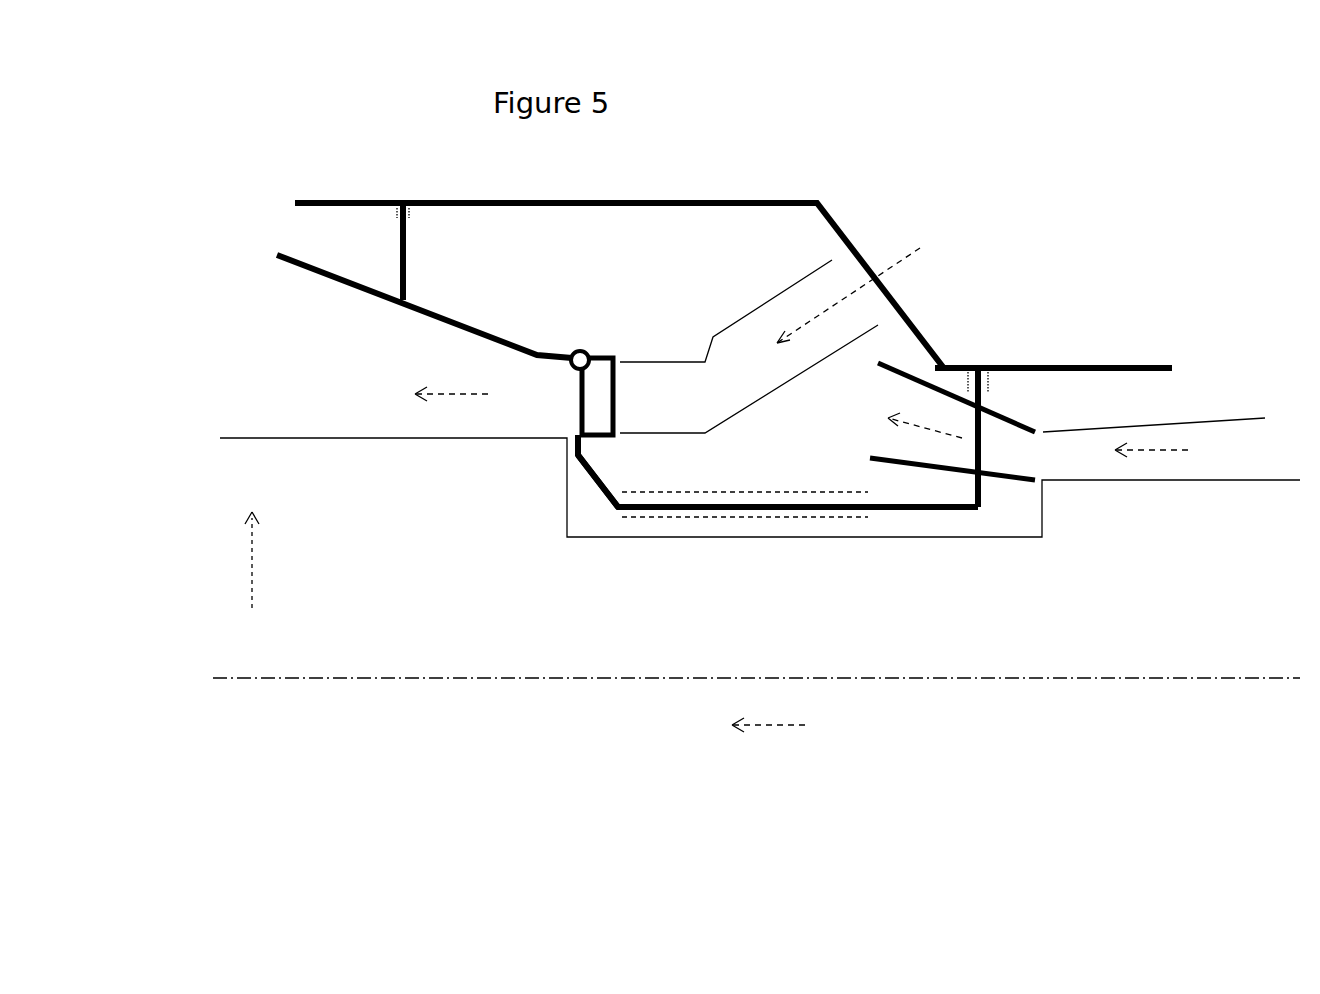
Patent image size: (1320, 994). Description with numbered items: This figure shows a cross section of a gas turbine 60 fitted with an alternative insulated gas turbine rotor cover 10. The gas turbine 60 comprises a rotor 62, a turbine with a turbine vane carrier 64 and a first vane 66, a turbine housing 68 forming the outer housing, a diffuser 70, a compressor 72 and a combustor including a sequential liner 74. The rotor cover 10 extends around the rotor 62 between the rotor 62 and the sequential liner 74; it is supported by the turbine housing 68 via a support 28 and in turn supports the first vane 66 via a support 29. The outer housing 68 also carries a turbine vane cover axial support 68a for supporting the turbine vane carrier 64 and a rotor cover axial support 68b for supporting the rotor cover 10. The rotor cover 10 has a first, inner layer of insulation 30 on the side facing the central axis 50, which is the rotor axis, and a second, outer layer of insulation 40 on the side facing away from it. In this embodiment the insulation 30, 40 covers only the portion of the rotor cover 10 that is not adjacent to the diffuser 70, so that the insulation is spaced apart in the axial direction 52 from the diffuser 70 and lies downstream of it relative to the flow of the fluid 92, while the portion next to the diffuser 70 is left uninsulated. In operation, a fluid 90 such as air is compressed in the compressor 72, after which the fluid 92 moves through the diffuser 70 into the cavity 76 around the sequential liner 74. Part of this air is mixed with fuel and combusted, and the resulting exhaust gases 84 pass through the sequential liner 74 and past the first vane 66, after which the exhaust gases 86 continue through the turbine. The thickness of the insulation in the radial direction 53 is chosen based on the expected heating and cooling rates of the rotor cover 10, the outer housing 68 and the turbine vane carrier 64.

The rotor cover 10 is at (793, 503).
The support 28 is at (978, 485).
The support 29 is at (600, 492).
The first layer of insulation 30 is at (722, 517).
The second layer of insulation 40 is at (855, 493).
The central axis 50 is at (522, 678).
The axial direction 52 is at (782, 725).
The radial direction 53 is at (252, 568).
The gas turbine 60 is at (1067, 228).
The rotor 62 is at (927, 655).
The turbine vane carrier 64 is at (337, 283).
The first vane 66 is at (588, 407).
The turbine housing 68 is at (790, 207).
The turbine vane cover axial support 68a is at (418, 213).
The rotor cover axial support 68b is at (988, 393).
The diffuser 70 is at (1025, 423).
The compressor 72 is at (1237, 418).
The sequential liner 74 is at (807, 277).
The cavity 76 is at (680, 455).
The exhaust gases 84 is at (897, 260).
The exhaust gases 86 is at (453, 394).
The fluid 90 is at (1157, 450).
The fluid 92 is at (920, 427).